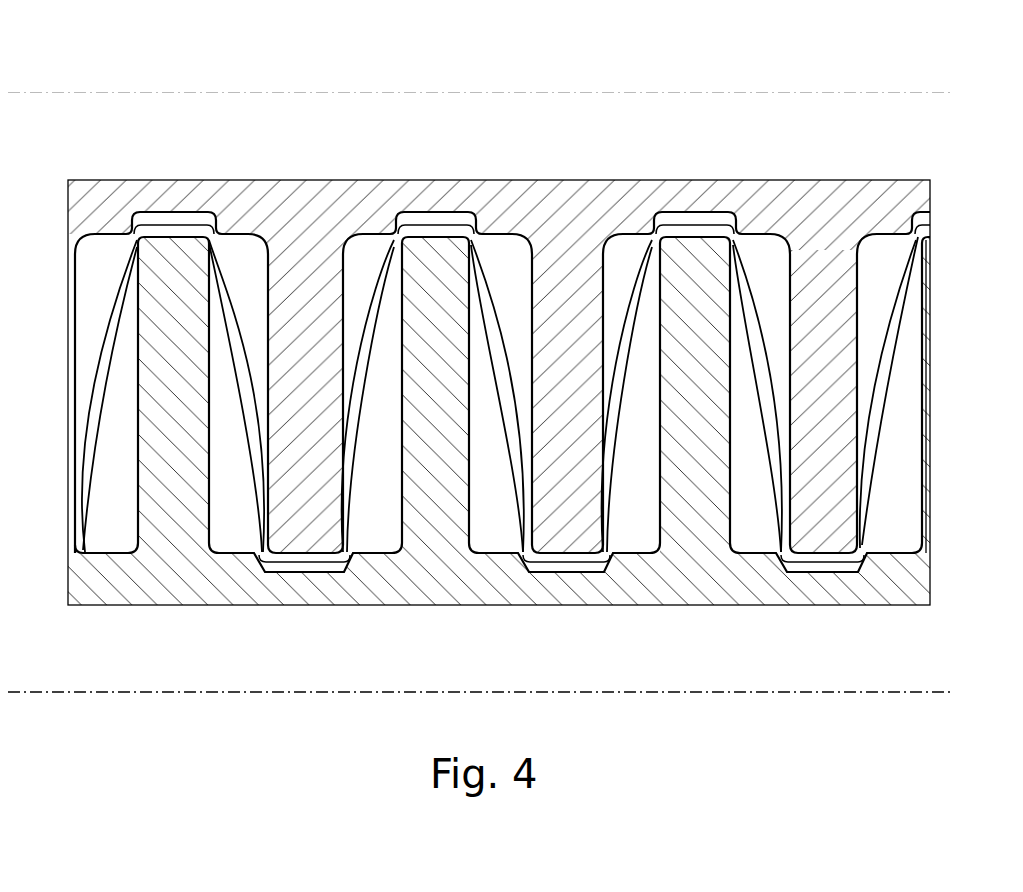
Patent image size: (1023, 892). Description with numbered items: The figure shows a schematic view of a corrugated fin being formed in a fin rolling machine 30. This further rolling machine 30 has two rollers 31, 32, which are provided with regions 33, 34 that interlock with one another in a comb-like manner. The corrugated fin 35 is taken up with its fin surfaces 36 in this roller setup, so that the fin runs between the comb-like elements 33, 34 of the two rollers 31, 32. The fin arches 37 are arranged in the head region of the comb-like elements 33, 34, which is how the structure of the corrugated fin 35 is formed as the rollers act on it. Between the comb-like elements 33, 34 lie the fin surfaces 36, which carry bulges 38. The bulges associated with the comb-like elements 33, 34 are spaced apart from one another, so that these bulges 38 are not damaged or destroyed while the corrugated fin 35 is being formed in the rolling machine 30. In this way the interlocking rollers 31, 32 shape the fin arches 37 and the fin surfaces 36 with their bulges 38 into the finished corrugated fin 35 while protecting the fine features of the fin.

The rolling machine 30 is at (836, 67).
The roller 31 is at (308, 220).
The roller 32 is at (428, 560).
The comb-like region 33 is at (830, 280).
The comb-like region 34 is at (697, 353).
The corrugated fin 35 is at (873, 493).
The fin surface 36 is at (918, 259).
The fin arch 37 is at (698, 220).
The bulge 38 is at (741, 283).